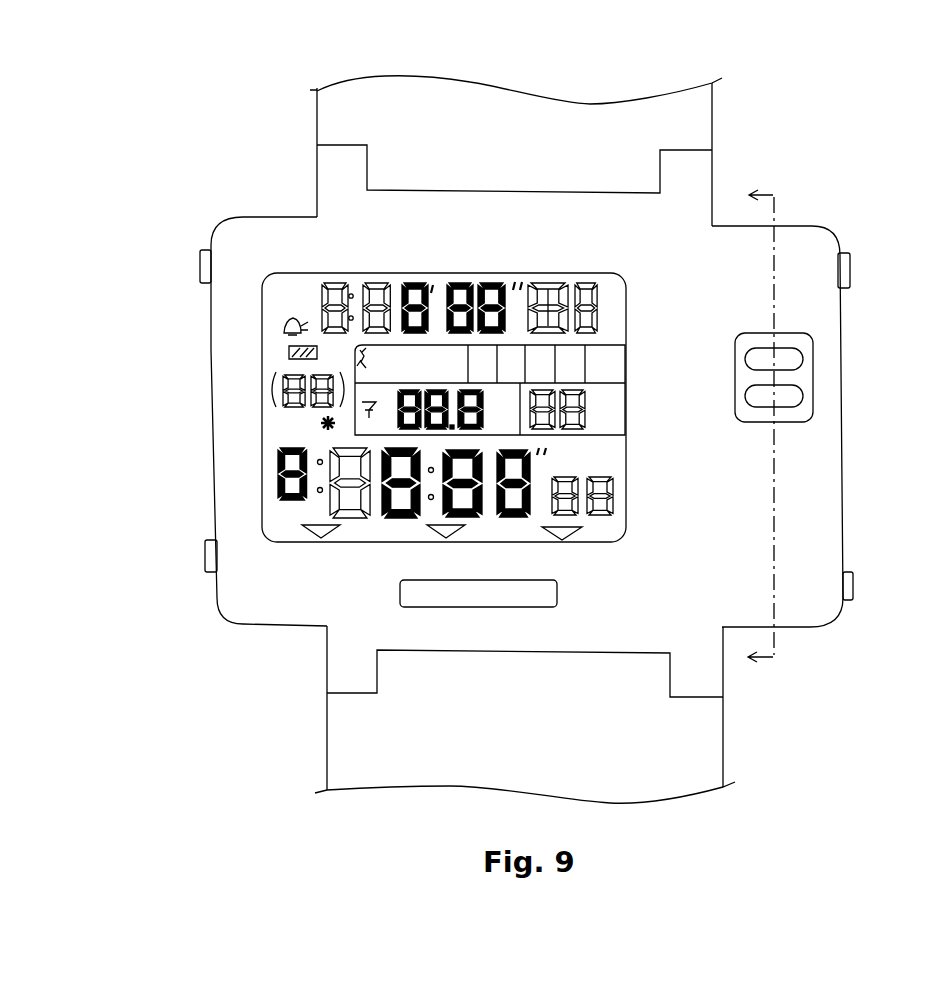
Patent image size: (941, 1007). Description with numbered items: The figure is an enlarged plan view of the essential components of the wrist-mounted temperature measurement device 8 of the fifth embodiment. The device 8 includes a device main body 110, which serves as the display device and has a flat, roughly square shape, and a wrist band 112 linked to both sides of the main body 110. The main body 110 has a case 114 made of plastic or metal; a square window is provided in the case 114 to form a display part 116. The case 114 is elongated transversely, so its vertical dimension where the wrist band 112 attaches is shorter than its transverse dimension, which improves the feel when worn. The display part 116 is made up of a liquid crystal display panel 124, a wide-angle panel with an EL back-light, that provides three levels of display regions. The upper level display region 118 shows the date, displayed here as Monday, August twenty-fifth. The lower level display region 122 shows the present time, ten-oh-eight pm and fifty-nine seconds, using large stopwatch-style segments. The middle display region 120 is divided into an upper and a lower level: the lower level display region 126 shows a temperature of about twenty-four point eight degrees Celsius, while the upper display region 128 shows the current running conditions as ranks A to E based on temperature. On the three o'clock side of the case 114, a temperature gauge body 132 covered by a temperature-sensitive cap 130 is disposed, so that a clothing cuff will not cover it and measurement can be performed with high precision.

The wrist-mounted temperature measurement device 8 is at (752, 154).
The device main body 110 is at (827, 237).
The wrist band 112 is at (617, 141).
The case 114 is at (262, 557).
The display part 116 is at (258, 441).
The upper level display region 118 is at (629, 278).
The middle display region 120 is at (678, 355).
The lower level display region 122 is at (630, 540).
The liquid crystal display panel 124 is at (258, 363).
The lower level display region 126 is at (630, 388).
The upper display region 128 is at (630, 357).
The temperature-sensitive cap 130 is at (813, 415).
The temperature gauge body 132 is at (822, 403).